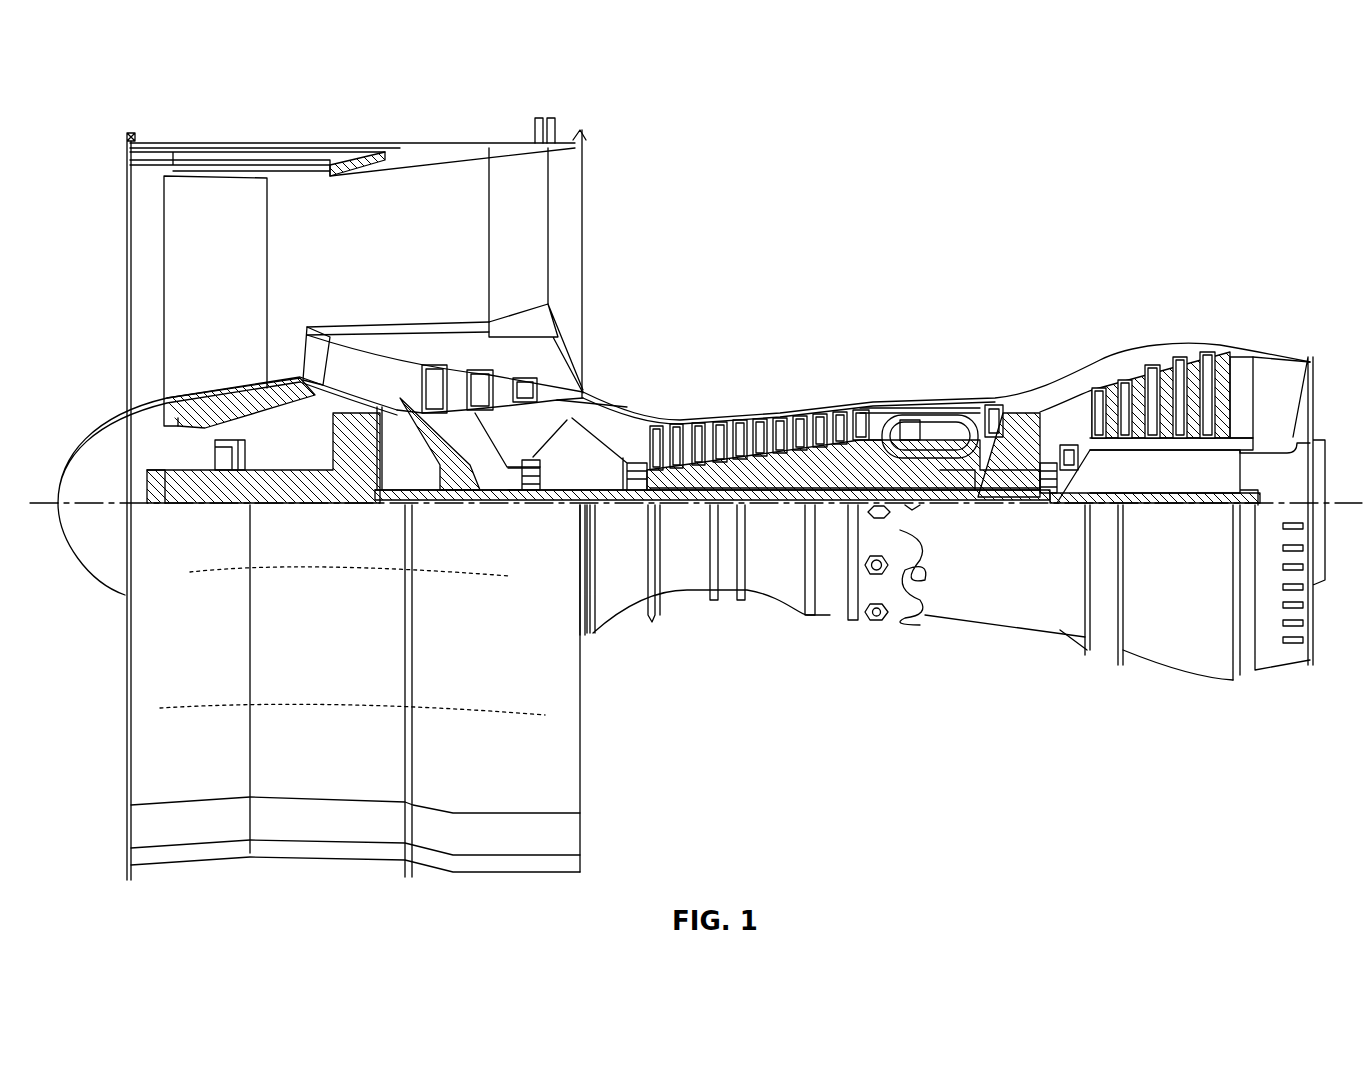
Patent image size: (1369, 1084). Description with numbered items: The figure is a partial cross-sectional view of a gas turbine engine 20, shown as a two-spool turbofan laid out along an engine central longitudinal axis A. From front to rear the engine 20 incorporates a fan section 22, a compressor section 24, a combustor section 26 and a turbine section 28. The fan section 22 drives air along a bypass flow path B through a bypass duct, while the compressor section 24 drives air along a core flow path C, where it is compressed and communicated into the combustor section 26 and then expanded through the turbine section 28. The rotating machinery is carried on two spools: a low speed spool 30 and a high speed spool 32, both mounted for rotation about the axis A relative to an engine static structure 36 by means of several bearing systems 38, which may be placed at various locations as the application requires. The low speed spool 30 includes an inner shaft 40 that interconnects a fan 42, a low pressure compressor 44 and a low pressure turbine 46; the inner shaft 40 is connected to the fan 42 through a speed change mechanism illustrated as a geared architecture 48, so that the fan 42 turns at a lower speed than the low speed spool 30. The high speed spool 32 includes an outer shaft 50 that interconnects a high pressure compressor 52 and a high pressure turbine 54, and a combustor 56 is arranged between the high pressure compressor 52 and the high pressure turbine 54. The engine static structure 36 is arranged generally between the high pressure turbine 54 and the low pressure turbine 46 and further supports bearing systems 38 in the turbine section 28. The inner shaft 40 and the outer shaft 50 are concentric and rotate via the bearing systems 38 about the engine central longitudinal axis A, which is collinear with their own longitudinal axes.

The gas turbine engine 20 is at (1140, 184).
The fan section 22 is at (385, 118).
The compressor section 24 is at (766, 362).
The combustor section 26 is at (928, 368).
The turbine section 28 is at (1070, 348).
The low speed spool 30 is at (797, 510).
The high speed spool 32 is at (850, 460).
The engine static structure 36 is at (836, 618).
The bearing systems 38 is at (228, 466).
The inner shaft 40 is at (597, 507).
The fan 42 is at (238, 268).
The low pressure compressor 44 is at (500, 383).
The low pressure turbine 46 is at (1172, 372).
The geared architecture 48 is at (353, 475).
The outer shaft 50 is at (960, 475).
The high pressure compressor 52 is at (752, 455).
The high pressure turbine 54 is at (1010, 405).
The combustor 56 is at (937, 428).
The engine central longitudinal axis A is at (1332, 503).
The bypass flow path B is at (440, 238).
The core flow path C is at (306, 364).